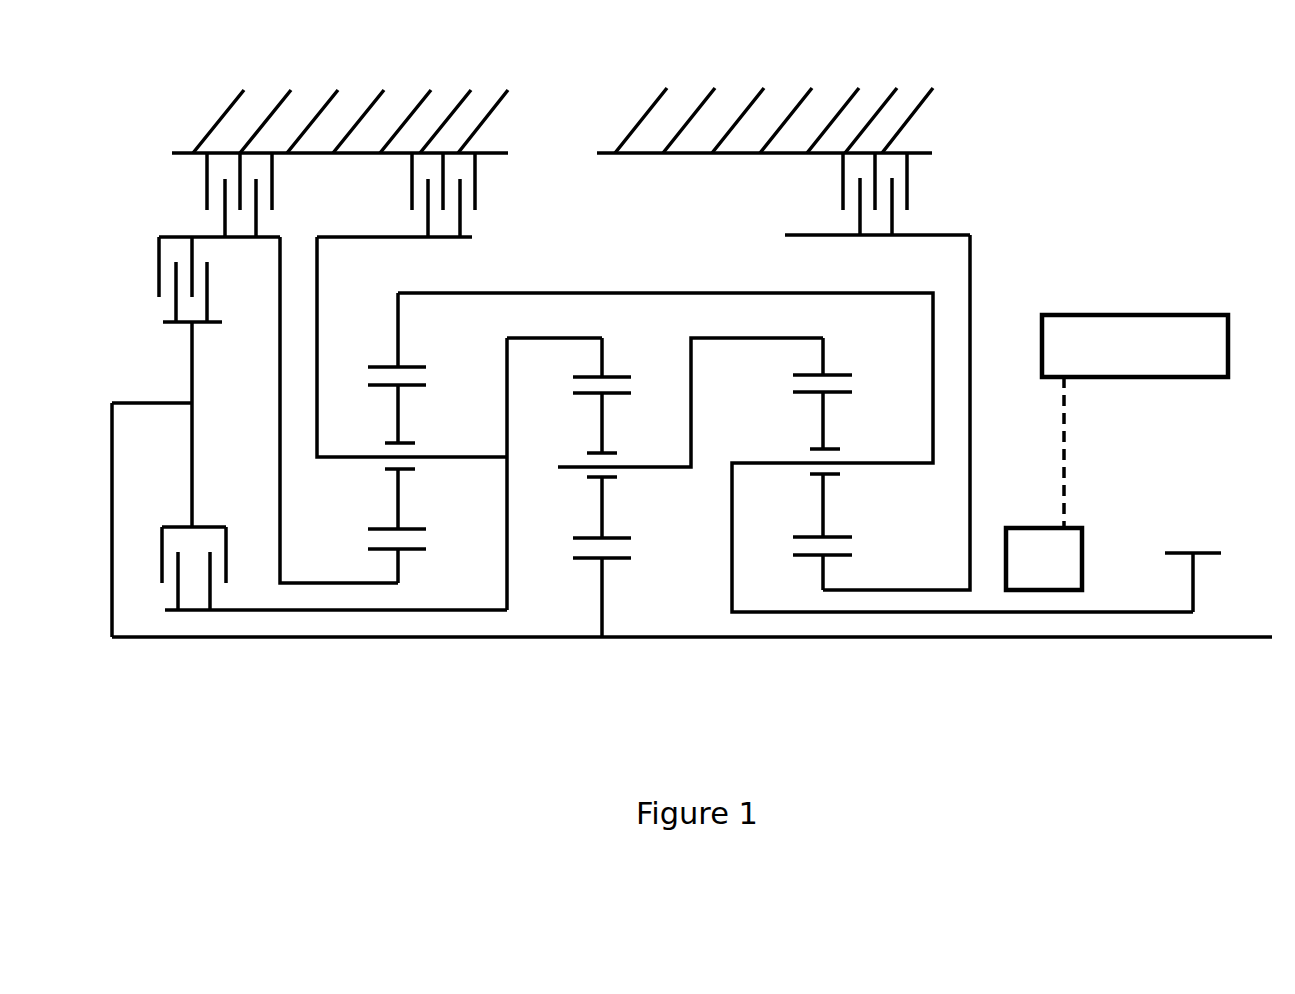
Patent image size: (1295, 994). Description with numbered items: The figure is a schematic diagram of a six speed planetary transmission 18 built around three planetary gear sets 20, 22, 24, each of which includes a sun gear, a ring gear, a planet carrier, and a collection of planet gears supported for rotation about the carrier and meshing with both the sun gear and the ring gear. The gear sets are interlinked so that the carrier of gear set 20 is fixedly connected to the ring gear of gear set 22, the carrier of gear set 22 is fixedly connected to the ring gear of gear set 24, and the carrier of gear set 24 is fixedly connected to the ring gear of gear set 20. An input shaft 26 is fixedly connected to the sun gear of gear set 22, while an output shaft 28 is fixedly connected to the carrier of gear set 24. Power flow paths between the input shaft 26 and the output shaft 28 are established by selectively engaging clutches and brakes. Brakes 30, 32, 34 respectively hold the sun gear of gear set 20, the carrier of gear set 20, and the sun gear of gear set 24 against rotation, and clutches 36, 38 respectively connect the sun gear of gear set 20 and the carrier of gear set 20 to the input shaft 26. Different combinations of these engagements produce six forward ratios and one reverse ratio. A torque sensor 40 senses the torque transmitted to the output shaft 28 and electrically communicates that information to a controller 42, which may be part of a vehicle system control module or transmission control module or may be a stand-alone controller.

The six speed planetary transmission 18 is at (603, 74).
The planetary gear set 20 is at (397, 499).
The planetary gear set 22 is at (602, 522).
The planetary gear set 24 is at (822, 522).
The input shaft 26 is at (1173, 637).
The output shaft 28 is at (1193, 567).
The brake 30 is at (208, 183).
The brake 32 is at (475, 195).
The brake 34 is at (908, 192).
The clutch 36 is at (226, 550).
The clutch 38 is at (225, 256).
The torque sensor 40 is at (1082, 563).
The controller 42 is at (1108, 315).